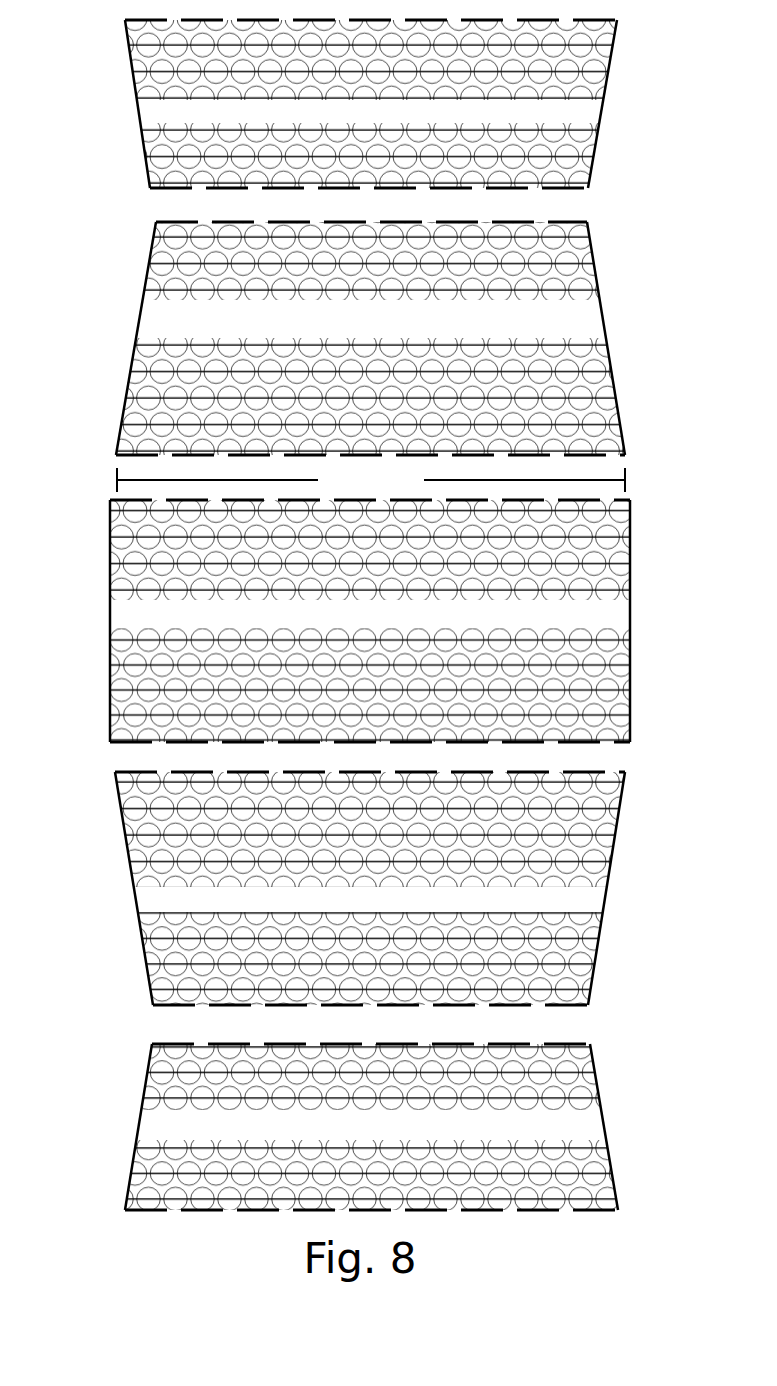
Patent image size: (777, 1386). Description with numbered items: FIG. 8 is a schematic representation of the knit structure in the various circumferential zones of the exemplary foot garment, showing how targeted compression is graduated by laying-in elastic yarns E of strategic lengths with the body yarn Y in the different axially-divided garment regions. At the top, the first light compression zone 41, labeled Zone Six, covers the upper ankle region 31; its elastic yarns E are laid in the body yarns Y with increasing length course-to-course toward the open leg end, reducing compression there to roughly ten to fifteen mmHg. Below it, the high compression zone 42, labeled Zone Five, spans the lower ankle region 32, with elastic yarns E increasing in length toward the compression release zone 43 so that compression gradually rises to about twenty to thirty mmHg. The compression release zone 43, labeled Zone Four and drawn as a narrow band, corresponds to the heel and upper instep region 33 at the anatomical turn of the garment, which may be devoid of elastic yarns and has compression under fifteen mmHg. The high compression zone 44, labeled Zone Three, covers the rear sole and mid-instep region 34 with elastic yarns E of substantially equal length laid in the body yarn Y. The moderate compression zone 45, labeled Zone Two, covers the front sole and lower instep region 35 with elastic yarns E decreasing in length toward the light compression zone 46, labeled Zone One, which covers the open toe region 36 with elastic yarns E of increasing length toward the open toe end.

The upper ankle region 31 is at (150, 62).
The first light compression zone 41 is at (605, 70).
The lower ankle region 32 is at (140, 335).
The high compression zone 42 is at (600, 318).
The heel and upper instep region 33 is at (115, 475).
The compression release zone 43 is at (628, 484).
The rear sole and mid-instep region 34 is at (120, 613).
The high compression zone 44 is at (613, 570).
The front sole and lower instep region 35 is at (150, 833).
The moderate compression zone 45 is at (617, 830).
The open toe region 36 is at (165, 1128).
The light compression zone 46 is at (590, 1088).
The elastic yarns E is at (163, 155).
The body yarn Y is at (580, 163).